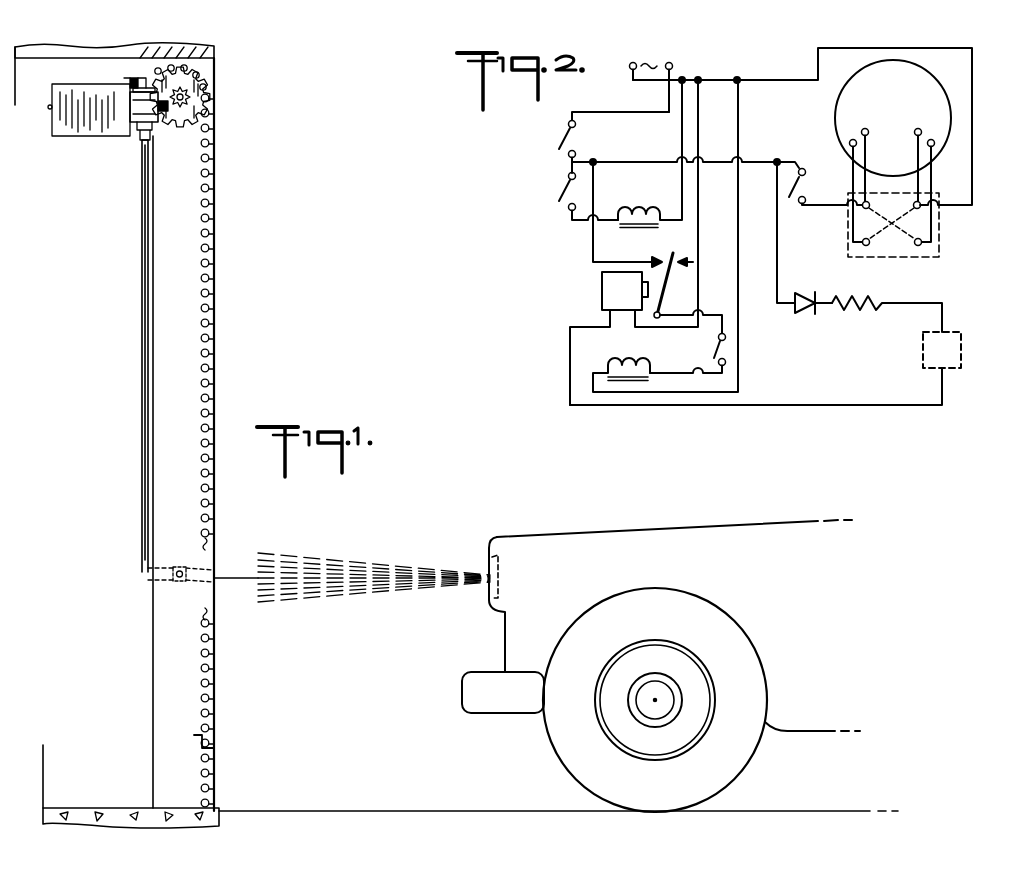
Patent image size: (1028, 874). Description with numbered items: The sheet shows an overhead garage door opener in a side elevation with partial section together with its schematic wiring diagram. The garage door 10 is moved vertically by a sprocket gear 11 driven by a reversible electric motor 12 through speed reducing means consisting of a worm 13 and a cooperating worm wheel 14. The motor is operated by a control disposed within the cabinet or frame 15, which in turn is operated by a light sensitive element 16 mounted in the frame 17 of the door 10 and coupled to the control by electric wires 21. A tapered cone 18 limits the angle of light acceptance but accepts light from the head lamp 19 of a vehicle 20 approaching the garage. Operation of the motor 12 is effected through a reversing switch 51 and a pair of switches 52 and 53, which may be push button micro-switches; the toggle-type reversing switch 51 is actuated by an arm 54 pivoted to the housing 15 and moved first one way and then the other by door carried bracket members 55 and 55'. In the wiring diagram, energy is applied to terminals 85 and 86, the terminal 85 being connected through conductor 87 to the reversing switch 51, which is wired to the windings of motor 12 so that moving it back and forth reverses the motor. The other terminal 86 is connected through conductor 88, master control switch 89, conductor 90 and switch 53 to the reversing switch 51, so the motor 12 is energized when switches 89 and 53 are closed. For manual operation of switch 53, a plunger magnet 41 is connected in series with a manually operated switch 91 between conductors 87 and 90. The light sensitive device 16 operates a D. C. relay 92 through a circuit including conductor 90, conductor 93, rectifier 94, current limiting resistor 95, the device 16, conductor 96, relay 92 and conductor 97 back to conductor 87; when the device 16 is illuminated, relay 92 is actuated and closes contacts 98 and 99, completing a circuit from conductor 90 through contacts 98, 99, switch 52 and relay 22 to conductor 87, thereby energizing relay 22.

In FIG. 1, the garage door 10 is at (217, 360).
In FIG. 1, the sprocket gear 11 is at (206, 85).
In FIG. 1, the reversible electric motor 12 is at (137, 111).
In FIG. 2, the reversible electric motor 12 is at (940, 88).
In FIG. 1, the worm 13 is at (180, 122).
In FIG. 1, the worm wheel 14 is at (190, 97).
In FIG. 1, the cabinet or frame 15 is at (72, 136).
In FIG. 1, the light sensitive element 16 is at (176, 583).
In FIG. 2, the light sensitive element 16 is at (962, 358).
In FIG. 1, the frame 17 is at (175, 660).
In FIG. 1, the tapered cone 18 is at (205, 568).
In FIG. 1, the head lamp 19 is at (491, 592).
In FIG. 1, the vehicle 20 is at (515, 720).
In FIG. 1, the electric wires 21 is at (140, 418).
In FIG. 2, the relay 22 is at (633, 358).
In FIG. 2, the plunger magnet 41 is at (650, 196).
In FIG. 2, the reversing switch 51 is at (940, 212).
In FIG. 2, the switch 52 is at (712, 352).
In FIG. 2, the switch 53 is at (808, 186).
In FIG. 1, the arm 54 is at (130, 84).
In FIG. 1, the bracket member 55 is at (120, 73).
In FIG. 1, the bracket member 55' is at (228, 728).
In FIG. 2, the terminal 85 is at (640, 55).
In FIG. 2, the terminal 86 is at (682, 55).
In FIG. 2, the conductor 87 is at (790, 58).
In FIG. 2, the conductor 88 is at (640, 110).
In FIG. 2, the master control switch 89 is at (558, 130).
In FIG. 2, the conductor 90 is at (656, 150).
In FIG. 2, the manually operated switch 91 is at (558, 185).
In FIG. 2, the D. C. relay 92 is at (602, 288).
In FIG. 2, the conductor 93 is at (777, 262).
In FIG. 2, the rectifier 94 is at (812, 312).
In FIG. 2, the current limiting resistor 95 is at (860, 312).
In FIG. 2, the conductor 96 is at (786, 410).
In FIG. 2, the conductor 97 is at (700, 290).
In FIG. 2, the relay contact 98 is at (684, 265).
In FIG. 2, the relay contact 99 is at (635, 254).